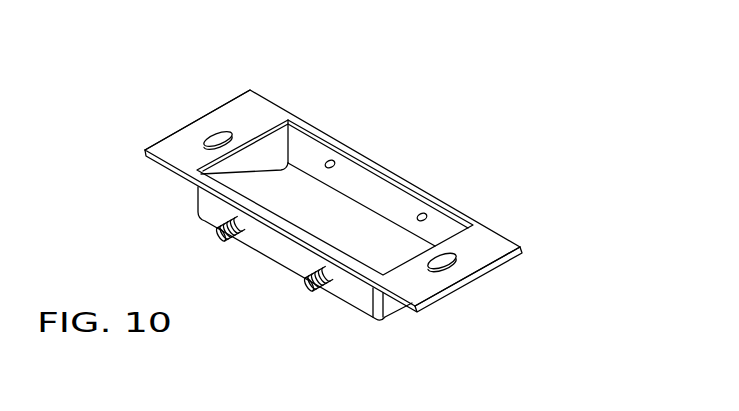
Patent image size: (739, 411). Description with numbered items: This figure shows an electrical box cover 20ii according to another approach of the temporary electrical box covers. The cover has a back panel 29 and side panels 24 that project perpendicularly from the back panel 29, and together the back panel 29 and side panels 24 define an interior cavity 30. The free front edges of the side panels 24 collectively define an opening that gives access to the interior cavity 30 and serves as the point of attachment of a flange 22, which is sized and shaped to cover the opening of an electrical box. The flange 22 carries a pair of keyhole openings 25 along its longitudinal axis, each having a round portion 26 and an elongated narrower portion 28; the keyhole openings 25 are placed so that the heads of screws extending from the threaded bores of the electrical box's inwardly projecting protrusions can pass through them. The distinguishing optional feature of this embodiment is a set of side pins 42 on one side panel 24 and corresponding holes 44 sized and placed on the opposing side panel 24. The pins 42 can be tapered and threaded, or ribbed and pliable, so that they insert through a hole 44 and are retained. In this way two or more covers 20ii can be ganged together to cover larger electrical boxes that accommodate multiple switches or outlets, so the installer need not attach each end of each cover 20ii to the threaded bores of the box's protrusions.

The electrical box cover 20ii is at (410, 107).
The flange 22 is at (170, 145).
The side wall/panel 24 is at (200, 198).
The keyhole opening 25 is at (217, 130).
The round portion 26 is at (172, 144).
The elongated narrower portion 28 is at (232, 136).
The back panel/base 29 is at (370, 243).
The interior cavity 30 is at (293, 198).
The side pin/protrusion 42 is at (305, 286).
The hole 44 is at (423, 214).